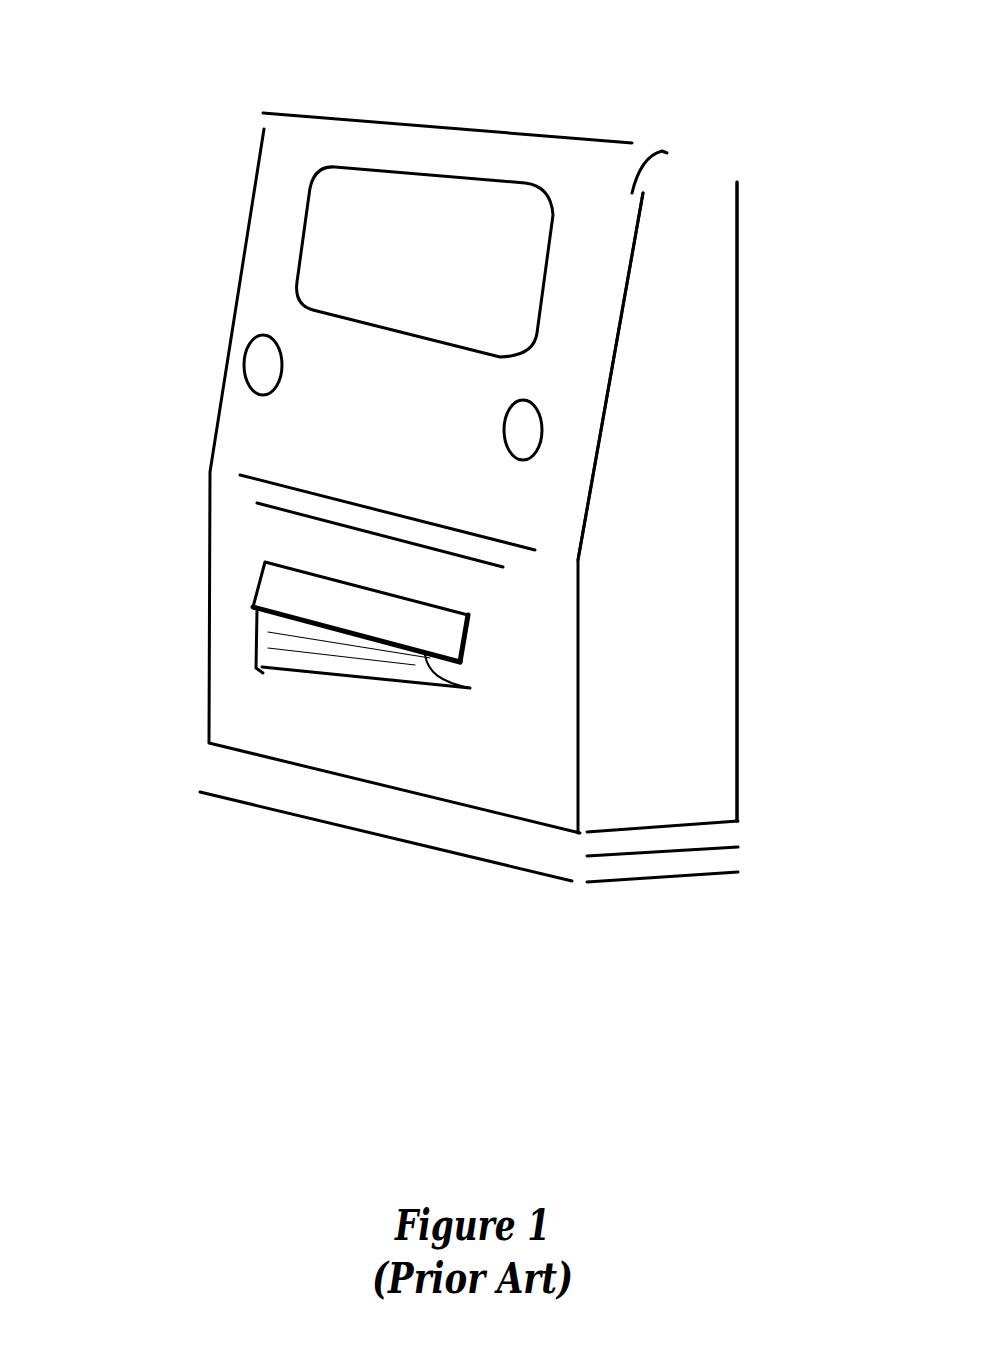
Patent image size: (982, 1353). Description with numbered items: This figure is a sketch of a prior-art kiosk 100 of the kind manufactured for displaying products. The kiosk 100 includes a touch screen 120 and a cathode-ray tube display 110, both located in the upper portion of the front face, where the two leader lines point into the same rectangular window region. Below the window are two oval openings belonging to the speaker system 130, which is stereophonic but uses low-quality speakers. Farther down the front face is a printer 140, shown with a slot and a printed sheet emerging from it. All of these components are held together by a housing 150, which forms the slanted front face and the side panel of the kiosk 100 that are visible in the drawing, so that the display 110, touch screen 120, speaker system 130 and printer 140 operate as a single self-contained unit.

The kiosk 100 is at (140, 95).
The cathode-ray tube display 110 is at (432, 235).
The touch screen 120 is at (355, 203).
The speaker system 130 is at (522, 430).
The printer 140 is at (267, 623).
The housing 150 is at (660, 533).